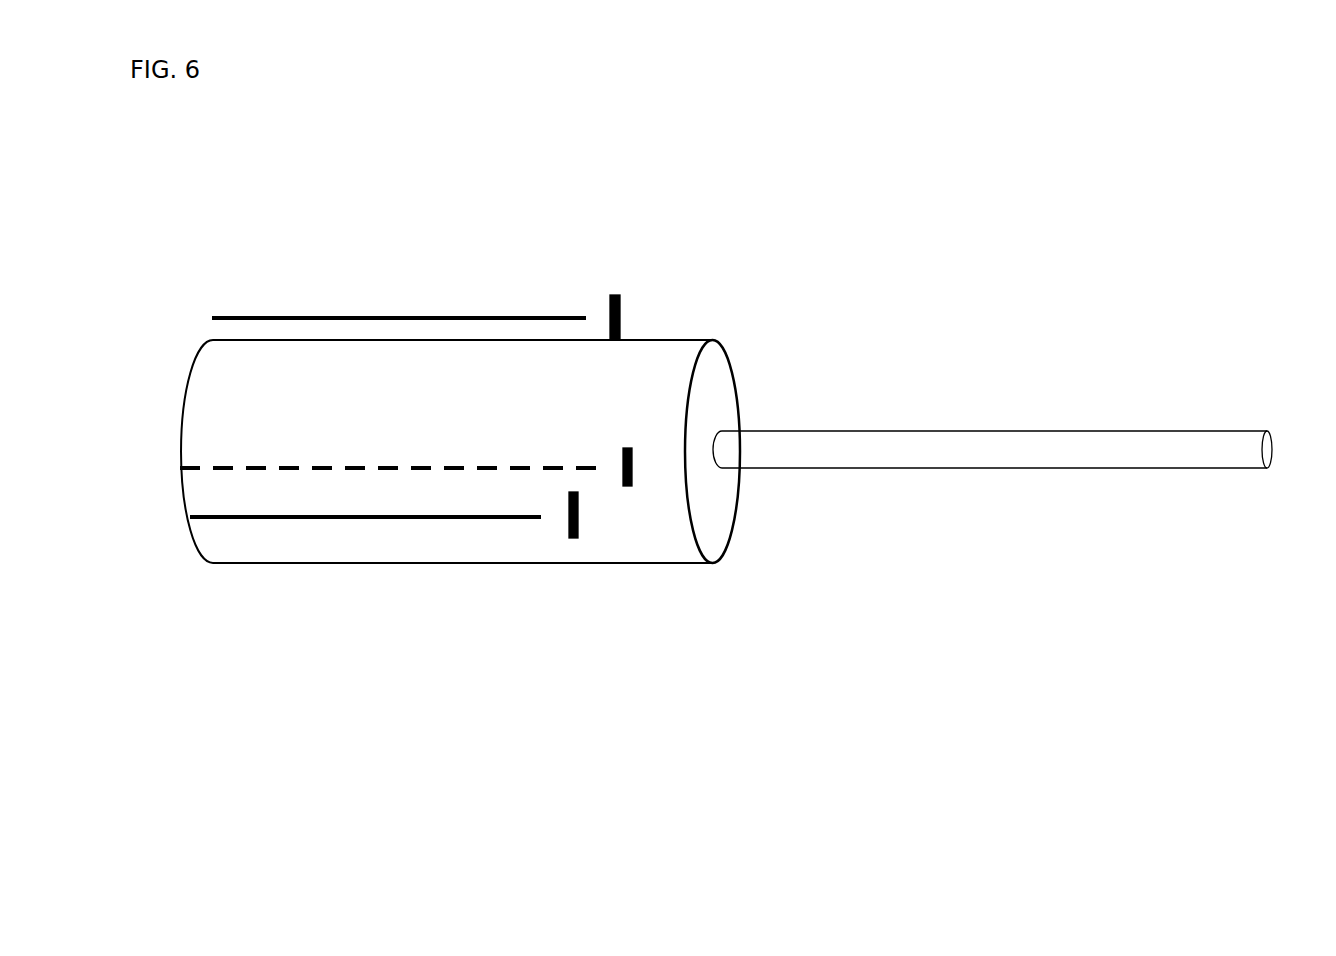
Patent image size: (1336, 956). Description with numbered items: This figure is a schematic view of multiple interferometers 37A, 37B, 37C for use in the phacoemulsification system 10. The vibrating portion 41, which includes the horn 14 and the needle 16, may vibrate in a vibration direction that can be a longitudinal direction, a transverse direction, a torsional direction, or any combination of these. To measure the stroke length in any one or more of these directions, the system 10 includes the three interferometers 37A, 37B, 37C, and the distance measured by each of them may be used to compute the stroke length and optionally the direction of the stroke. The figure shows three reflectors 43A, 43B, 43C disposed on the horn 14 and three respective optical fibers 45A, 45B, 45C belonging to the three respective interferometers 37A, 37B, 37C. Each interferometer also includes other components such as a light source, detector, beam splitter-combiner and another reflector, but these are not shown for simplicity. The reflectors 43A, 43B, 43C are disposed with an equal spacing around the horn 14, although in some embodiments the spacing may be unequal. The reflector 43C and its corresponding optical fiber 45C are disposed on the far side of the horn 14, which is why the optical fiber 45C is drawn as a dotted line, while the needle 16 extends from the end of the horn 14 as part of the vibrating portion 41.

The phacoemulsification system 10 is at (1055, 228).
The horn 14 is at (727, 550).
The needle 16 is at (932, 470).
The vibrating portion 41 is at (815, 428).
The interferometer 37A is at (430, 317).
The interferometer 37B is at (240, 517).
The interferometer 37C is at (291, 465).
The optical fiber 45A is at (307, 317).
The optical fiber 45B is at (280, 517).
The optical fiber 45C is at (392, 465).
The reflector 43A is at (613, 293).
The reflector 43B is at (573, 538).
The reflector 43C is at (627, 486).